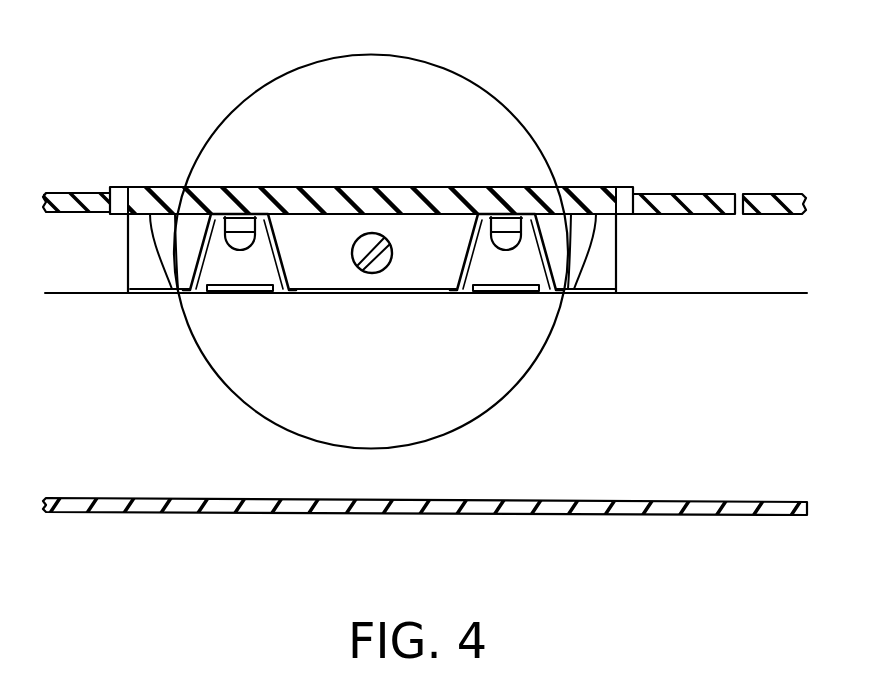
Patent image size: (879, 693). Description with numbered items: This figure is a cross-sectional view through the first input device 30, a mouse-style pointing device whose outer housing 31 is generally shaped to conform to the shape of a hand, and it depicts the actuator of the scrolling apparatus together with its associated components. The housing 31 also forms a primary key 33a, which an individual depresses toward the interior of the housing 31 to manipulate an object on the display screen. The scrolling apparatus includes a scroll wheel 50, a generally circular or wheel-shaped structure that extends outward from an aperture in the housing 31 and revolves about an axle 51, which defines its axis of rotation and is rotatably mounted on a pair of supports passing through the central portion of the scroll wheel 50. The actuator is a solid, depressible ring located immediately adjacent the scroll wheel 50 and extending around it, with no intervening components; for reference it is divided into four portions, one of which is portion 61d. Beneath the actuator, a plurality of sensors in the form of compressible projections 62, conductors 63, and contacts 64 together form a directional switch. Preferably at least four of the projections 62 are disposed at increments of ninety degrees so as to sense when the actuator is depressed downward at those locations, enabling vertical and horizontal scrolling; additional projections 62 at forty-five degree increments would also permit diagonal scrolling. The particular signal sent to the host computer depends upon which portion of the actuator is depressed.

The input device 30 is at (607, 117).
The outer housing 31 is at (793, 216).
The primary key 33a is at (75, 192).
The scroll wheel 50 is at (488, 90).
The axle 51 is at (384, 272).
The portion of actuator 61d is at (375, 187).
The compressible projections 62 is at (128, 252).
The conductors 63 is at (240, 251).
The contacts 64 is at (246, 291).